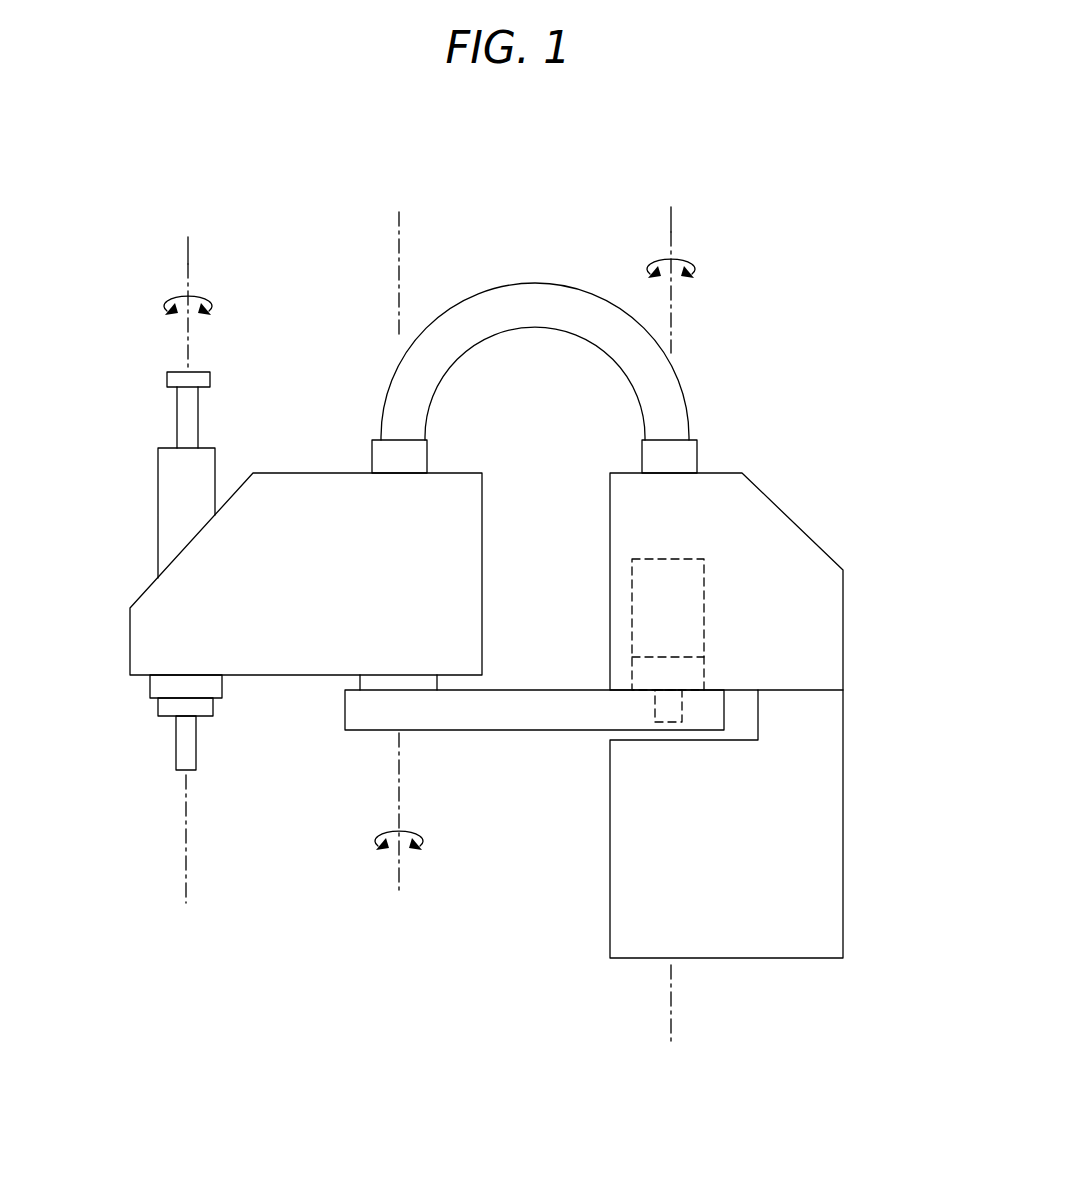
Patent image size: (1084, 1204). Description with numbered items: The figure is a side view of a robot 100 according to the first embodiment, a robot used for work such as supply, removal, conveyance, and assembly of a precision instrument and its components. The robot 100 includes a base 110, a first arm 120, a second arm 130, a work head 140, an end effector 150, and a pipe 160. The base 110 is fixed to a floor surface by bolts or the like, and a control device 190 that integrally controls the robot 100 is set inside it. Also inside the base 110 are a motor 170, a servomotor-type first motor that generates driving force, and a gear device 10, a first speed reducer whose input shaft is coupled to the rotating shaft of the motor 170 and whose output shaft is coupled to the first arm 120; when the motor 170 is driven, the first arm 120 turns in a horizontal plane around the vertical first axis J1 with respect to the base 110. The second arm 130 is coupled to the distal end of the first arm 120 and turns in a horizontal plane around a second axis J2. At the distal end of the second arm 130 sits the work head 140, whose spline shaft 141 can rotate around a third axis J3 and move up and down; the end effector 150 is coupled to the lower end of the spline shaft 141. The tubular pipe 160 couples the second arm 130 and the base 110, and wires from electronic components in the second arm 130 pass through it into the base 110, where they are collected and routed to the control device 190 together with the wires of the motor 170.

The robot 100 is at (740, 247).
The base 110 is at (852, 820).
The first arm 120 is at (470, 740).
The second arm 130 is at (490, 504).
The work head 140 is at (148, 490).
The spline shaft 141 is at (188, 413).
The end effector 150 is at (175, 748).
The pipe 160 is at (509, 298).
The motor 170 is at (630, 611).
The gear device 10 is at (630, 677).
The control device 190 is at (735, 880).
The first axis J1 is at (669, 229).
The second axis J2 is at (399, 868).
The third axis J3 is at (254, 237).